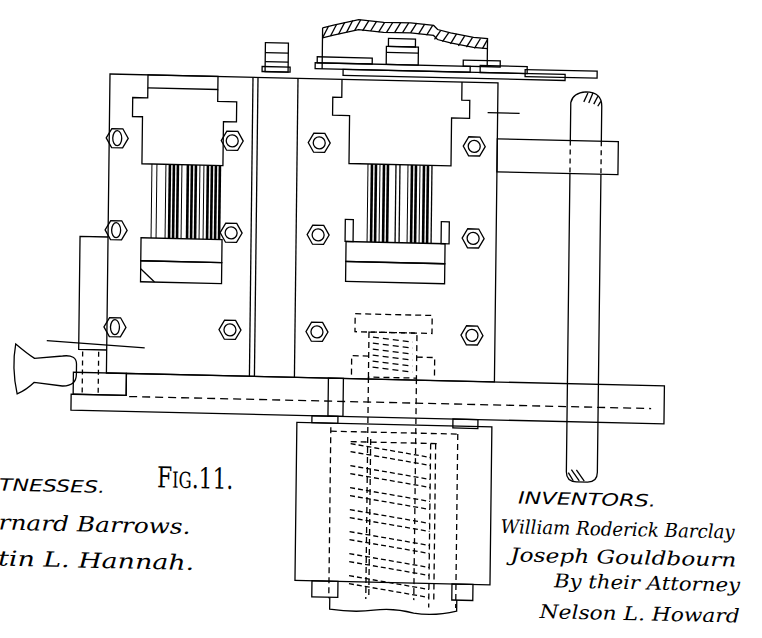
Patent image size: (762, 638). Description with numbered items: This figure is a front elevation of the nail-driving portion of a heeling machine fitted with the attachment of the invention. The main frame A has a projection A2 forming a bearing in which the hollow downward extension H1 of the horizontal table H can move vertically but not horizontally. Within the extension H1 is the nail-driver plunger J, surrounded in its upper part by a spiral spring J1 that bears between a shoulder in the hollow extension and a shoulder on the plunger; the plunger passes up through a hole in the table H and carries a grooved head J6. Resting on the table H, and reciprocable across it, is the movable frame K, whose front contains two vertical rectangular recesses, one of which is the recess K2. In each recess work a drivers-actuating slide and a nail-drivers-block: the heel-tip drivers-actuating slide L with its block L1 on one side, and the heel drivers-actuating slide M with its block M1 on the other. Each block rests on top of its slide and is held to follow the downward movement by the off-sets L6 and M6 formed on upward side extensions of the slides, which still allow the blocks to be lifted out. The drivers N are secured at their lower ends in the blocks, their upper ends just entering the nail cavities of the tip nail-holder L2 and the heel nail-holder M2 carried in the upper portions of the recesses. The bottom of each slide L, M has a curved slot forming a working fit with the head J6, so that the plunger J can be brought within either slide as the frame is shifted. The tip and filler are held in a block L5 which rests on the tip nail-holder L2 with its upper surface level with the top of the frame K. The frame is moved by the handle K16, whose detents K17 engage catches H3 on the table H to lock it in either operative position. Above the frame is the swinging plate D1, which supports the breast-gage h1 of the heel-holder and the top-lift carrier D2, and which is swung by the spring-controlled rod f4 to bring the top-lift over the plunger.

The movable frame K is at (311, 228).
The tip and filler block L5 is at (166, 76).
The tip nail-holder L2 is at (157, 124).
The vertical rectangular recess K2 is at (175, 190).
The off-set L6 is at (160, 222).
The nail-drivers-block L1 is at (150, 249).
The heel-tip drivers-actuating slide L is at (155, 269).
The heel nail-holder M2 is at (400, 161).
The drivers N is at (430, 186).
The off-set M6 is at (450, 220).
The nail-drivers-block M1 is at (438, 250).
The heel drivers-actuating slide M is at (440, 269).
The grooved head J6 is at (413, 360).
The table H is at (618, 376).
The catches H3 is at (340, 403).
The detents K17 is at (118, 386).
The handle K16 is at (35, 373).
The projection A2 is at (485, 453).
The nail-driver plunger J is at (388, 426).
The spiral spring J1 is at (387, 512).
The downward extension H1 is at (340, 583).
The main frame A is at (475, 582).
The spring-controlled rod f4 is at (285, 46).
The breast-gage h1 is at (375, 66).
The swinging plate D1 is at (482, 61).
The top-lift carrier D2 is at (550, 62).